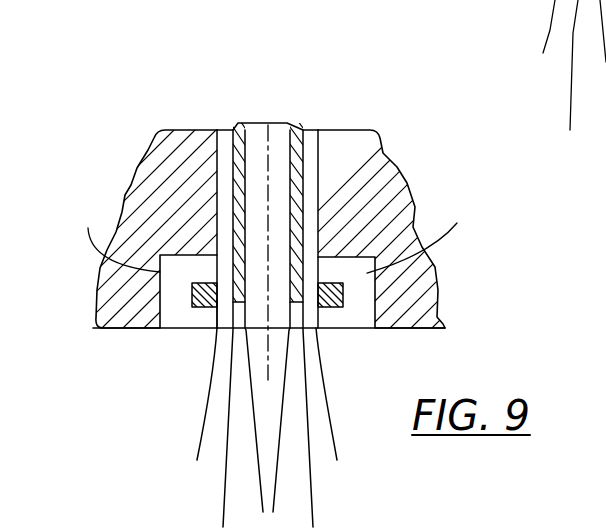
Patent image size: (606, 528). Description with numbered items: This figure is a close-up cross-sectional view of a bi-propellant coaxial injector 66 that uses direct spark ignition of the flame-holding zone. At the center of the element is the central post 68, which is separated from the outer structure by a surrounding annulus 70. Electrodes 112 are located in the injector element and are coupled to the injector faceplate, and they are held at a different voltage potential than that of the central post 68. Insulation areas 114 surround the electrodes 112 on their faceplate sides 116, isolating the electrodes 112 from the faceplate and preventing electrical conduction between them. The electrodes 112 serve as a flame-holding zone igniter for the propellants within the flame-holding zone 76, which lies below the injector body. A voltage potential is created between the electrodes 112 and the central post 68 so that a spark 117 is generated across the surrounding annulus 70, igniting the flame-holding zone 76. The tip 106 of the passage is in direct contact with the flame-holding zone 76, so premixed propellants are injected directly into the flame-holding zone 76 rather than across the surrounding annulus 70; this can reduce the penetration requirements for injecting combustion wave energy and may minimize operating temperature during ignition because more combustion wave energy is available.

The bi-propellant coaxial injector 66 is at (496, 103).
The central post 68 is at (313, 133).
The surrounding annulus 70 is at (212, 150).
The flame-holding zone 76 is at (215, 328).
The tip 106 is at (177, 253).
The electrodes 112 is at (195, 312).
The insulation areas 114 is at (157, 328).
The faceplate sides 116 is at (362, 247).
The spark 117 is at (220, 327).